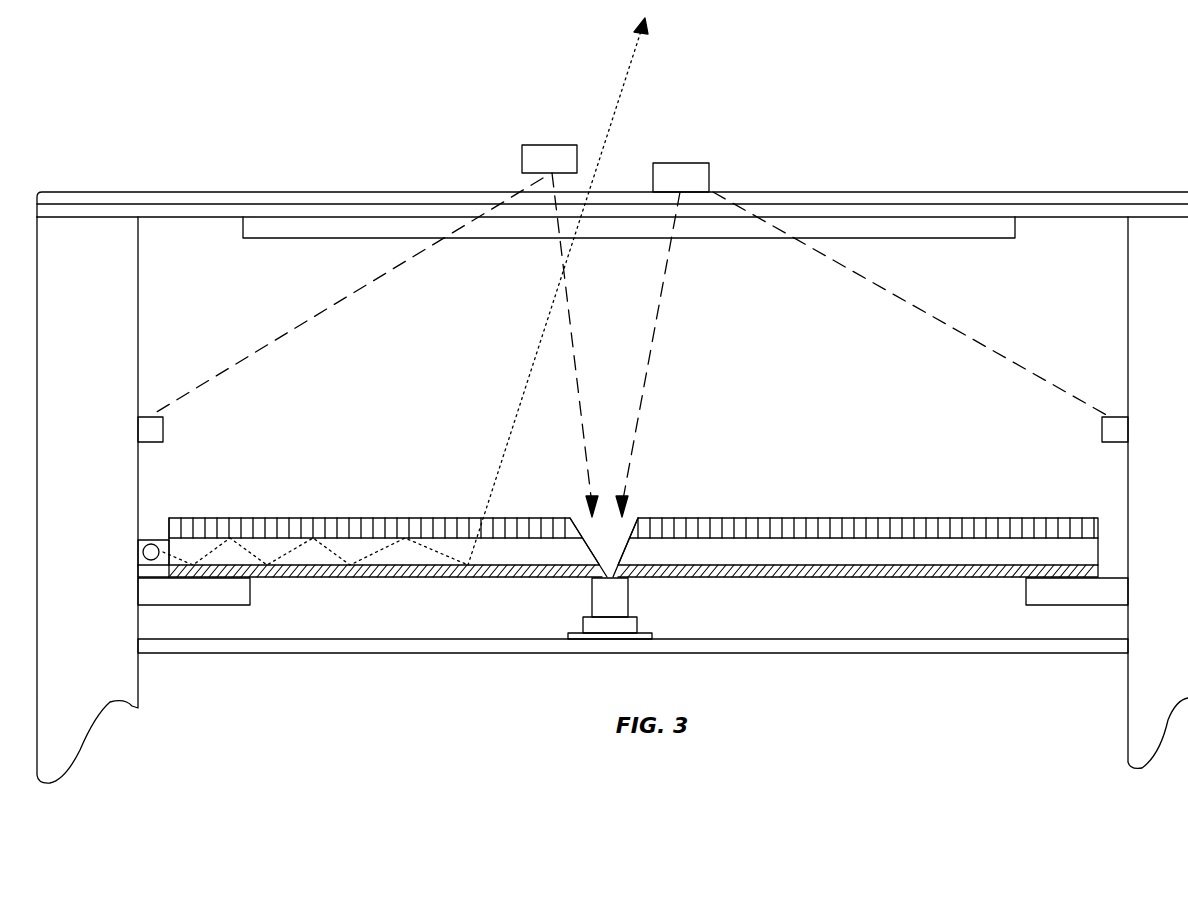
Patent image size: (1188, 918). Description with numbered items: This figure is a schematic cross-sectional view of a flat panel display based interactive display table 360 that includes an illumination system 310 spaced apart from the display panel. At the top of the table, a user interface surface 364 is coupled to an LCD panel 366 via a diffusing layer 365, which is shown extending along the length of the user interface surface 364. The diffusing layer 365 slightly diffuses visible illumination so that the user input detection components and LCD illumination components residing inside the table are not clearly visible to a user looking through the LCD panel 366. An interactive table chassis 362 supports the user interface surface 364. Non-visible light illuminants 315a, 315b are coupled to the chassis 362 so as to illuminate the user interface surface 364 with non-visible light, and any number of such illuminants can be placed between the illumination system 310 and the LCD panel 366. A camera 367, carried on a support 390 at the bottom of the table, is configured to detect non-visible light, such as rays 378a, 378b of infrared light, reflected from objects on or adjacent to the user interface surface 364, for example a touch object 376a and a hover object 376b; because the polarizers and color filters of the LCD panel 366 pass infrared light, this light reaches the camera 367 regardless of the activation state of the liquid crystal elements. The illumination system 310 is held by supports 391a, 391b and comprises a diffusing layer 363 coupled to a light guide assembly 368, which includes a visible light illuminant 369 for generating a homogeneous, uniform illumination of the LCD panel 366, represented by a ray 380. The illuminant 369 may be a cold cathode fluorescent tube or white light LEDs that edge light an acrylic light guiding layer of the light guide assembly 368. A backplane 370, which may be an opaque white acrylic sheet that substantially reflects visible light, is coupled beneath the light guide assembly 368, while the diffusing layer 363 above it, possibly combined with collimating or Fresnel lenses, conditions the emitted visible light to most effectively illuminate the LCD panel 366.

The interactive display table 360 is at (155, 120).
The user interface surface 364 is at (1018, 192).
The diffusing layer 365 is at (282, 212).
The LCD panel 366 is at (532, 240).
The interactive table chassis 362 is at (140, 360).
The touch object 376a is at (690, 163).
The hover object 376b is at (537, 145).
The ray of IR light 378a is at (312, 320).
The ray of IR light 378b is at (930, 322).
The ray 380 is at (626, 72).
The non-visible light illuminant 315a is at (166, 428).
The non-visible light illuminant 315b is at (1100, 428).
The diffusing layer 363 is at (780, 518).
The light guide assembly 368 is at (515, 553).
The visible light illuminant 369 is at (145, 538).
The backplane 370 is at (872, 578).
The illumination system 310 is at (914, 510).
The camera 367 is at (640, 630).
The support 391a is at (252, 597).
The support 391b is at (1024, 598).
The support 390 is at (354, 654).